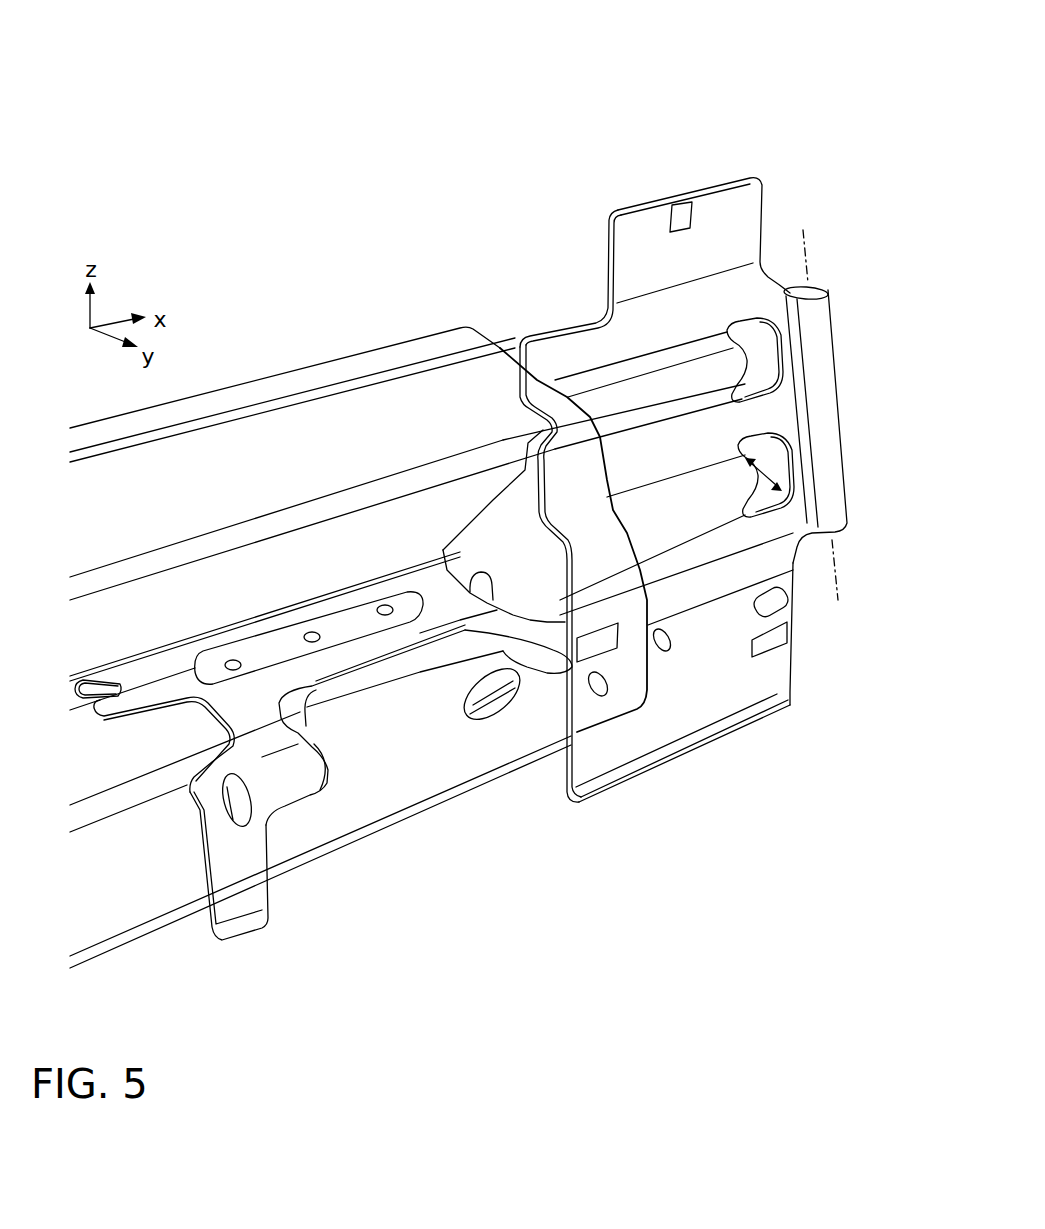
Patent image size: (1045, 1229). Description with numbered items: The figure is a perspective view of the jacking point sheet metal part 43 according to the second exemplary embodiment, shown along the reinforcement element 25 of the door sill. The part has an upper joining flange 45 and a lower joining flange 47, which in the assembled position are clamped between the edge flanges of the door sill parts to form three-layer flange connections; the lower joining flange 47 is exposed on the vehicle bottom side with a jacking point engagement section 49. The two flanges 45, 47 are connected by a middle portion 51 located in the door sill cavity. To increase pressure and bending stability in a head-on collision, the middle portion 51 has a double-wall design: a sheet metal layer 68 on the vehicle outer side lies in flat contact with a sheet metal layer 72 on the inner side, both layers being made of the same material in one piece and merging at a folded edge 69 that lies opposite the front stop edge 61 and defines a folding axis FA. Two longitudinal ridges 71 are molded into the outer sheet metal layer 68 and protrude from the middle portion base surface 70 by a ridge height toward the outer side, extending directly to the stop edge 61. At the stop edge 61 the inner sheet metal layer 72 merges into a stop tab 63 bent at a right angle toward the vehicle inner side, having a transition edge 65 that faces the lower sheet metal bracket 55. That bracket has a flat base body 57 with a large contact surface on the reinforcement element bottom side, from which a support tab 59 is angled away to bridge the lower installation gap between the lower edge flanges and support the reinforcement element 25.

The reinforcement element 25 is at (260, 392).
The jacking point sheet metal part 43 is at (675, 120).
The upper joining flange 45 is at (735, 225).
The lower joining flange 47 is at (760, 687).
The jacking point engagement section 49 is at (648, 773).
The middle portion 51 is at (558, 455).
The lower sheet metal bracket 55 is at (323, 639).
The base body 57 is at (350, 618).
The support tab 59 is at (241, 920).
The stop edge 61 is at (525, 378).
The stop tab 63 is at (502, 578).
The transition edge 65 is at (518, 616).
The sheet metal layer 68 is at (553, 348).
The folded edge 69 is at (820, 342).
The middle portion base surface 70 is at (770, 410).
The longitudinal ridges 71 is at (662, 512).
The sheet metal layer 72 is at (518, 350).
The folding axis FA is at (833, 570).